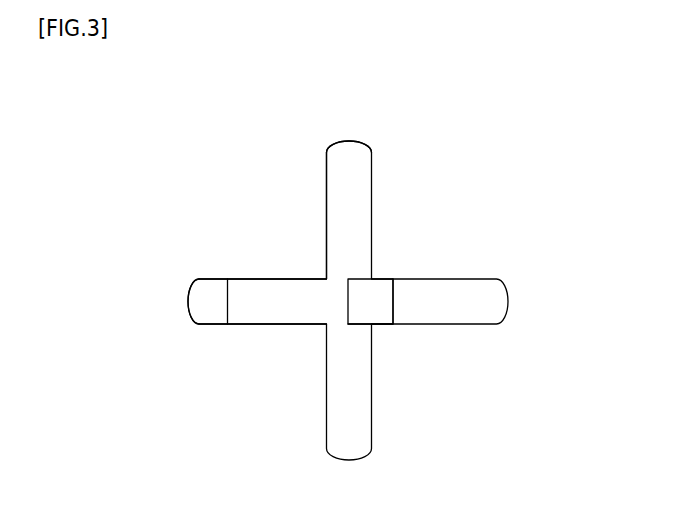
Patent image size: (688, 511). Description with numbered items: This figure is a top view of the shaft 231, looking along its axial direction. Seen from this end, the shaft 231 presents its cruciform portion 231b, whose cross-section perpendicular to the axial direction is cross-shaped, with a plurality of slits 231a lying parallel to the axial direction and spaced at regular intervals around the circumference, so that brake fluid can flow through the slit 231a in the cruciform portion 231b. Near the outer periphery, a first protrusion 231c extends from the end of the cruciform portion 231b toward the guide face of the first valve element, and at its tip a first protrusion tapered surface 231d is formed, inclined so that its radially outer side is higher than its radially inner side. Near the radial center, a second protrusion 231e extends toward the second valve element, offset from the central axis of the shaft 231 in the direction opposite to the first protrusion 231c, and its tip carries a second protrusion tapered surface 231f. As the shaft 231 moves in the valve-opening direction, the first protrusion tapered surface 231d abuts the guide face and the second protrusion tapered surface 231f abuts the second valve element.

The shaft 231 is at (490, 157).
The slit 231a is at (277, 222).
The cruciform portion 231b is at (352, 141).
The first protrusion 231c is at (209, 325).
The first protrusion tapered surface 231d is at (207, 303).
The second protrusion 231e is at (360, 278).
The second protrusion tapered surface 231f is at (375, 310).